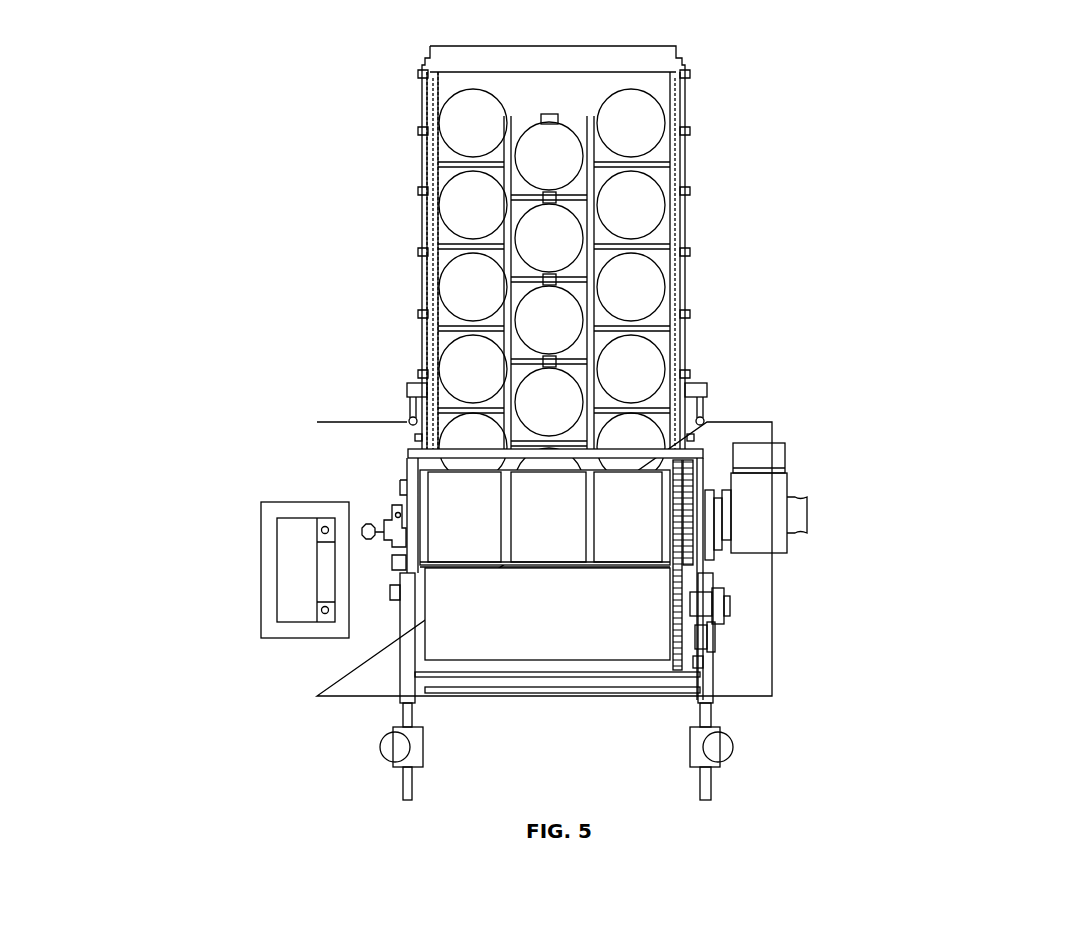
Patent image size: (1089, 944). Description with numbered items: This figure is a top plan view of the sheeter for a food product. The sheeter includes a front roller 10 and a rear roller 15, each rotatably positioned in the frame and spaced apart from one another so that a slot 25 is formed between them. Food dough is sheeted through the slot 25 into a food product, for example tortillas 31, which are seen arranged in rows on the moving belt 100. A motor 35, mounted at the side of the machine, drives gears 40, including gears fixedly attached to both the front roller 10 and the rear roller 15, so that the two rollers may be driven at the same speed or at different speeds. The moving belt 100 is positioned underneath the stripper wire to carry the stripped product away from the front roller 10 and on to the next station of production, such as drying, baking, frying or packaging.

The moving belt 100 is at (671, 234).
The tortillas 31 is at (452, 208).
The front roller 10 is at (436, 508).
The rear roller 15 is at (451, 623).
The slot 25 is at (634, 562).
The gears 40 is at (702, 492).
The motor 35 is at (785, 503).